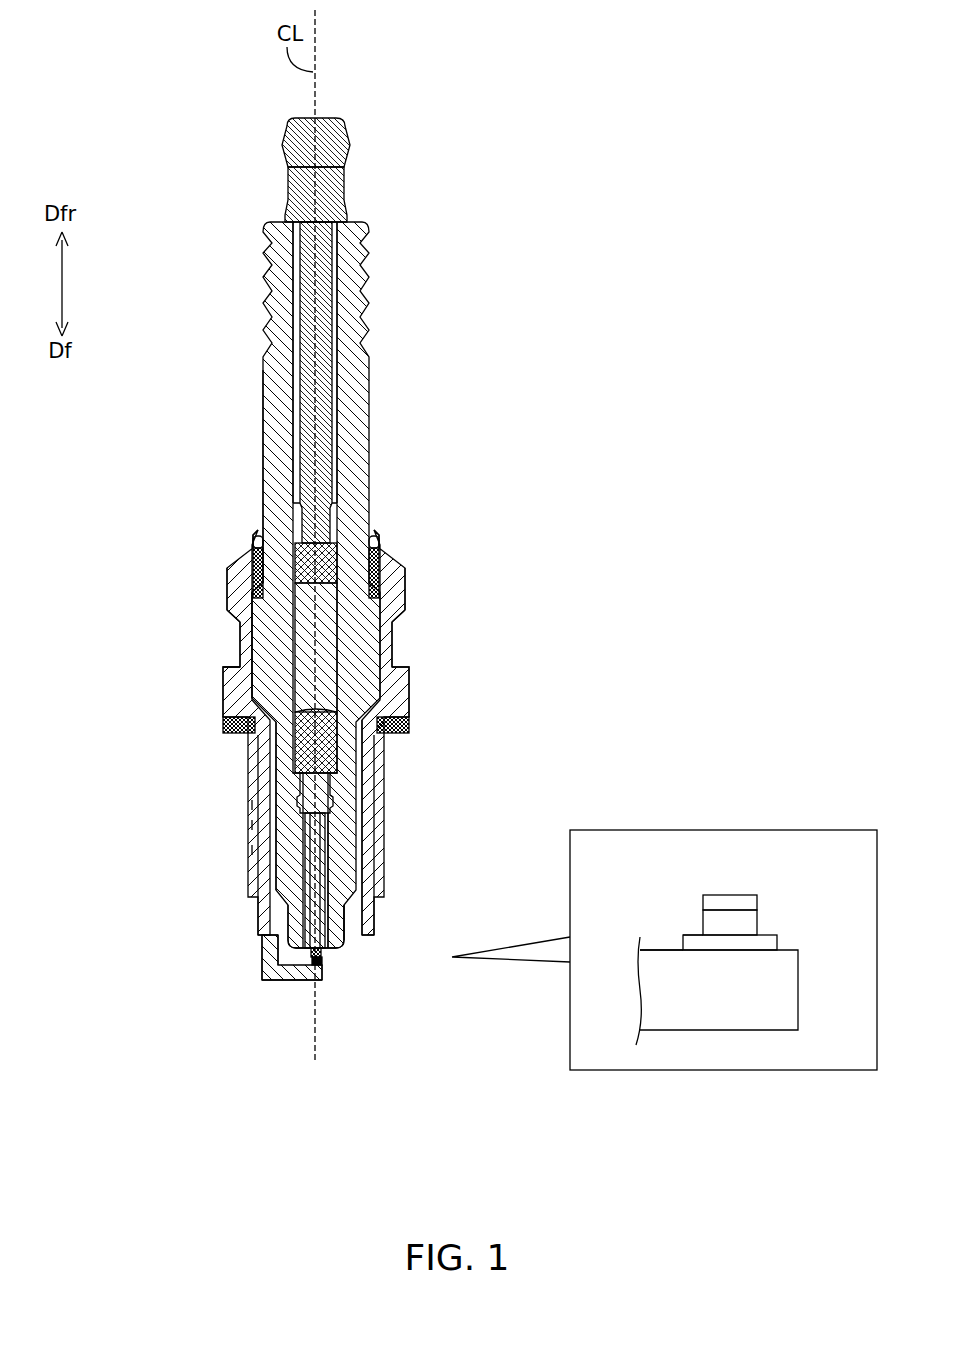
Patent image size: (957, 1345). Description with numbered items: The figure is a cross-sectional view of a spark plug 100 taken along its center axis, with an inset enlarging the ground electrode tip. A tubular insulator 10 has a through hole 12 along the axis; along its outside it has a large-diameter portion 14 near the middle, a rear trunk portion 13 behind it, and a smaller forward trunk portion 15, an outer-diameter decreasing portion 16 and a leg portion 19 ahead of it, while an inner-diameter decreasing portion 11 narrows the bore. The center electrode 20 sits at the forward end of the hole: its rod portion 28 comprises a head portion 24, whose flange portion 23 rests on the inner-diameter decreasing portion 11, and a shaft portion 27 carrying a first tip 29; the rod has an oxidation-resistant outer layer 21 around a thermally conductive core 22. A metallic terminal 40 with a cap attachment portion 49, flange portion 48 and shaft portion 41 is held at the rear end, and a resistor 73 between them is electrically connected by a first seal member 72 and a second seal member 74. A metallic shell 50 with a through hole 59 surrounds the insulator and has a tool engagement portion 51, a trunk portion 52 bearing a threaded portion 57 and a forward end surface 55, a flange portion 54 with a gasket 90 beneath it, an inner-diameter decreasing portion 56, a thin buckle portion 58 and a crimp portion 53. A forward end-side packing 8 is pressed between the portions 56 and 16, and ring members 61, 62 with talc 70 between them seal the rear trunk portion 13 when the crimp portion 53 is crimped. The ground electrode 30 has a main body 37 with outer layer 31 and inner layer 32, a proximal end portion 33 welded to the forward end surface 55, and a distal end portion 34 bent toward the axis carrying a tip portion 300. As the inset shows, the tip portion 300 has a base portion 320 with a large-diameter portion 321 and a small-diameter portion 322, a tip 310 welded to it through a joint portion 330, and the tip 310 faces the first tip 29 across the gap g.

The spark plug 100 is at (186, 90).
The insulator 10 is at (372, 345).
The inner-diameter decreasing portion 11 is at (330, 790).
The through hole 12 is at (300, 440).
The rear trunk portion 13 is at (266, 460).
The large-diameter portion 14 is at (245, 630).
The forward trunk portion 15 is at (248, 752).
The outer-diameter decreasing portion 16 is at (330, 840).
The leg portion 19 is at (342, 855).
The center electrode 20 is at (321, 865).
The outer layer 21 is at (345, 878).
The core 22 is at (340, 905).
The flange portion 23 is at (258, 825).
The head portion 24 is at (255, 805).
The shaft portion 27 is at (216, 858).
The rod portion 28 is at (193, 835).
The first tip 29 is at (330, 948).
The forward end-side packing 8 is at (330, 815).
The ground electrode 30 is at (327, 1003).
The outer layer 31 is at (305, 982).
The inner layer 32 is at (275, 985).
The proximal end portion 33 is at (265, 962).
The distal end portion 34 is at (325, 968).
The main body 37 is at (315, 985).
The tip portion 300 is at (322, 962).
The tip 310 is at (760, 900).
The base portion 320 is at (780, 944).
The large-diameter portion 321 is at (668, 948).
The small-diameter portion 322 is at (690, 938).
The joint portion 330 is at (760, 922).
The metallic terminal 40 is at (246, 330).
The shaft portion 41 is at (266, 382).
The flange portion 48 is at (285, 222).
The cap attachment portion 49 is at (290, 200).
The metallic shell 50 is at (307, 728).
The tool engagement portion 51 is at (227, 572).
The trunk portion 52 is at (262, 925).
The crimp portion 53 is at (258, 530).
The flange portion 54 is at (222, 700).
The forward end surface 55 is at (258, 945).
The inner-diameter decreasing portion 56 is at (352, 805).
The threaded portion 57 is at (250, 787).
The buckle portion 58 is at (240, 645).
The through hole 59 is at (223, 683).
The ring member 61 is at (250, 543).
The ring member 62 is at (232, 602).
The talc 70 is at (245, 555).
The first seal member 72 is at (360, 755).
The resistor 73 is at (405, 682).
The second seal member 74 is at (402, 578).
The gasket 90 is at (408, 728).
The gap g is at (330, 958).